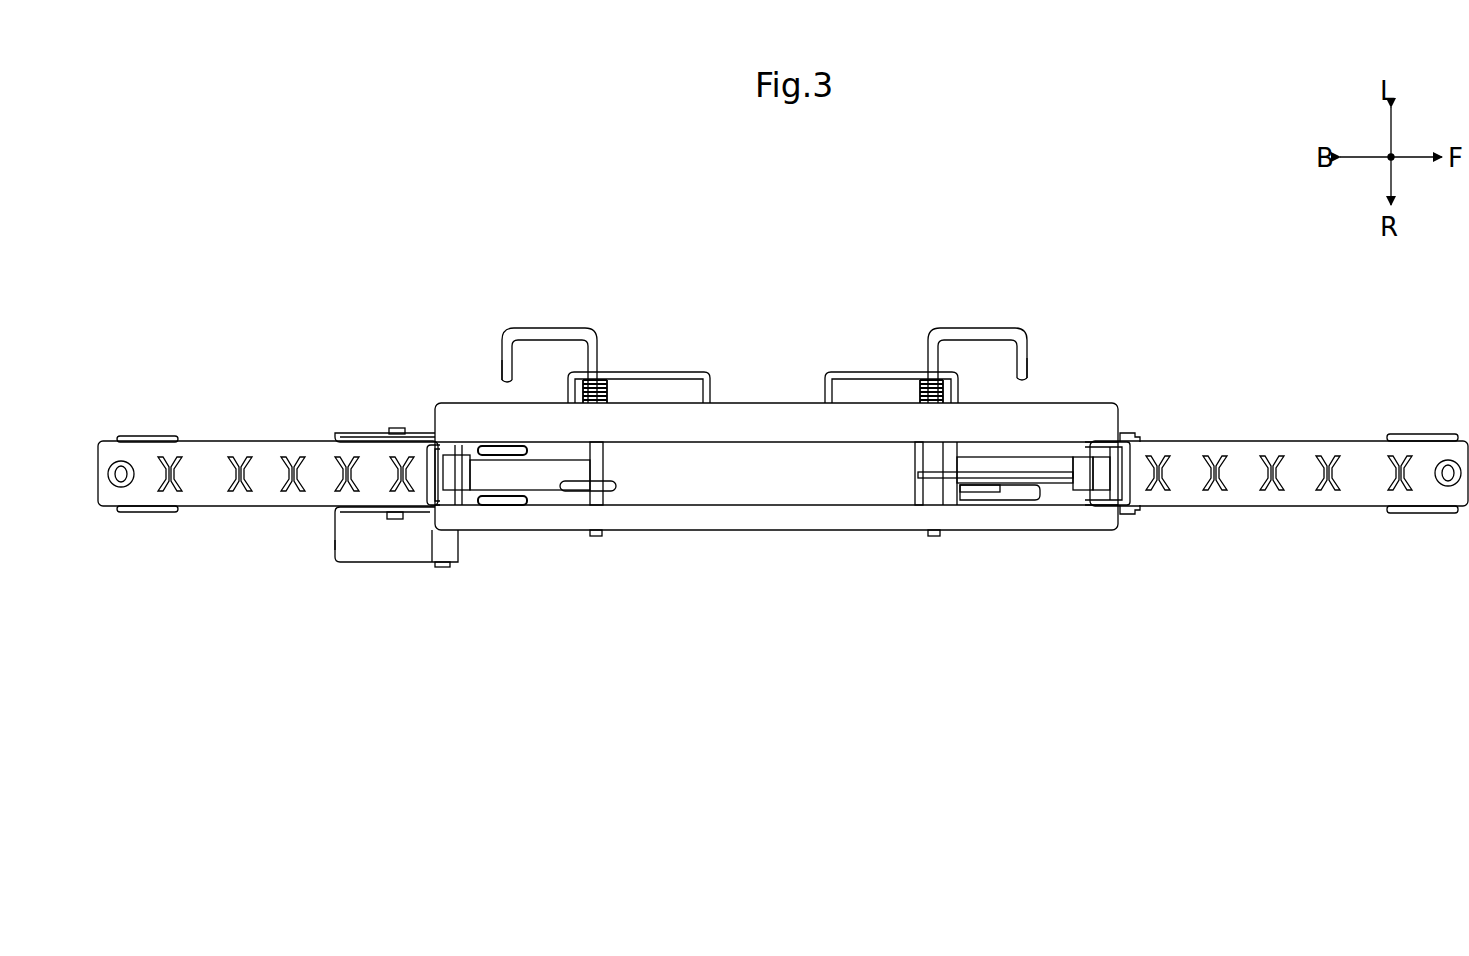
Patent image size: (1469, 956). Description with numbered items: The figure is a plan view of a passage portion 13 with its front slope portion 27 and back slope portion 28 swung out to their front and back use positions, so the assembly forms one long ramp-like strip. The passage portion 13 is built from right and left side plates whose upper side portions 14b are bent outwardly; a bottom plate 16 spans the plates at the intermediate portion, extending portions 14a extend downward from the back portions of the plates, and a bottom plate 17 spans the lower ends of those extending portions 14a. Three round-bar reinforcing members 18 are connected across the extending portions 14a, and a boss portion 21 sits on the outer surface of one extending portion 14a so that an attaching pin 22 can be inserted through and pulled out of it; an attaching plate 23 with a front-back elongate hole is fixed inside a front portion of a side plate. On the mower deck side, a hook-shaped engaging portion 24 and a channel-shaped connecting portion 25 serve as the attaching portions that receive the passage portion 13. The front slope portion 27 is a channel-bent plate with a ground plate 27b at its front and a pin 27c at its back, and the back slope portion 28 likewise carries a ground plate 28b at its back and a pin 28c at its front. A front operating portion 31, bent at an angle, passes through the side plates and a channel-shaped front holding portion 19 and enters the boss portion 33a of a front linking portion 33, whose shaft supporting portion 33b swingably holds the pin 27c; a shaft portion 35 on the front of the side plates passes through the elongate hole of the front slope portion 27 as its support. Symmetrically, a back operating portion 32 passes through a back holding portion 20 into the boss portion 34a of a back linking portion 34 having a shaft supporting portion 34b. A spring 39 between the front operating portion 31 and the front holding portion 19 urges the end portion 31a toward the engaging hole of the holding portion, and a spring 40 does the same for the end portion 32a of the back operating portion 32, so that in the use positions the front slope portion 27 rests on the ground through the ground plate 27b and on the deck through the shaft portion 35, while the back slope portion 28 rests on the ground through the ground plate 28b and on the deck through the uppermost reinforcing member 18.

The passage portion 13 is at (678, 552).
The extending portion 14a is at (385, 440).
The upper side portion 14b is at (765, 401).
The bottom plate 16 is at (748, 480).
The bottom plate 17 is at (990, 445).
The reinforcing member 18 is at (428, 440).
The front holding portion 19 is at (850, 372).
The back holding portion 20 is at (677, 372).
The boss portion 21 is at (430, 546).
The attaching pin 22 is at (442, 568).
The attaching plate 23 is at (1020, 497).
The engaging portion 24 is at (972, 500).
The connecting portion 25 is at (335, 545).
The front slope portion 27 is at (1290, 510).
The ground plate 27b is at (1422, 434).
The pin 27c is at (1108, 527).
The back slope portion 28 is at (227, 510).
The ground plate 28b is at (140, 436).
The pin 28c is at (466, 493).
The front operating portion 31 is at (975, 336).
The end portion 31a is at (1023, 360).
The back operating portion 32 is at (555, 336).
The end portion 32a is at (506, 365).
The front linking portion 33 is at (1035, 455).
The boss portion 33a is at (935, 456).
The shaft supporting portion 33b is at (1080, 492).
The back linking portion 34 is at (537, 465).
The boss portion 34a is at (598, 457).
The shaft supporting portion 34b is at (467, 452).
The shaft portion 35 is at (1128, 430).
The spring 39 is at (930, 392).
The spring 40 is at (602, 388).